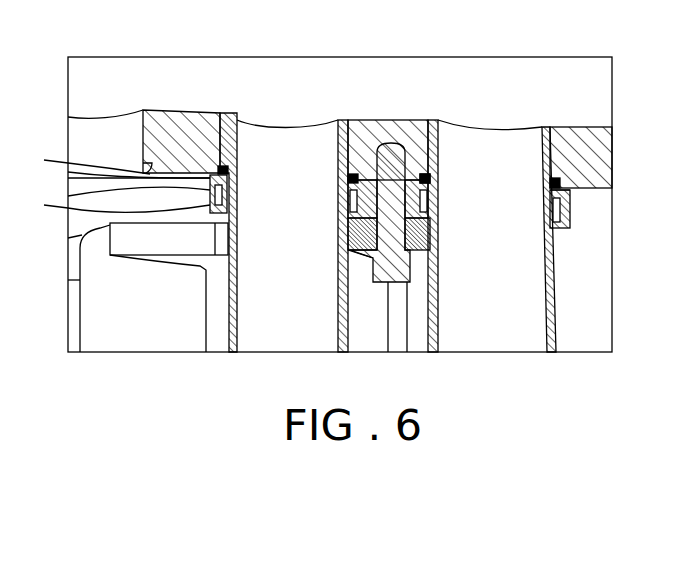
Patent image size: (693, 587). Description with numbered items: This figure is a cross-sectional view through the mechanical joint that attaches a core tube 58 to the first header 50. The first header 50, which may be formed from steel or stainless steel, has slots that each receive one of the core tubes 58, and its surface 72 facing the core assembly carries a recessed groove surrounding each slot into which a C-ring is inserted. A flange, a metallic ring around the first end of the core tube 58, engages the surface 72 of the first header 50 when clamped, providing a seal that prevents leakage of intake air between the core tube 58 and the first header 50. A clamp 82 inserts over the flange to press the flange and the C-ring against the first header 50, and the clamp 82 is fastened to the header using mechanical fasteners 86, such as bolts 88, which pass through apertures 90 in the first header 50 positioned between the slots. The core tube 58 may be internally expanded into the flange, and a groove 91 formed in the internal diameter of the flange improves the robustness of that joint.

The first header 50 is at (590, 158).
The core tube 58 is at (550, 305).
The surface 72 is at (115, 163).
The clamp 82 is at (350, 250).
The mechanical fastener 86 is at (388, 253).
The bolt 88 is at (408, 260).
The aperture 90 is at (390, 143).
The groove 91 is at (565, 215).